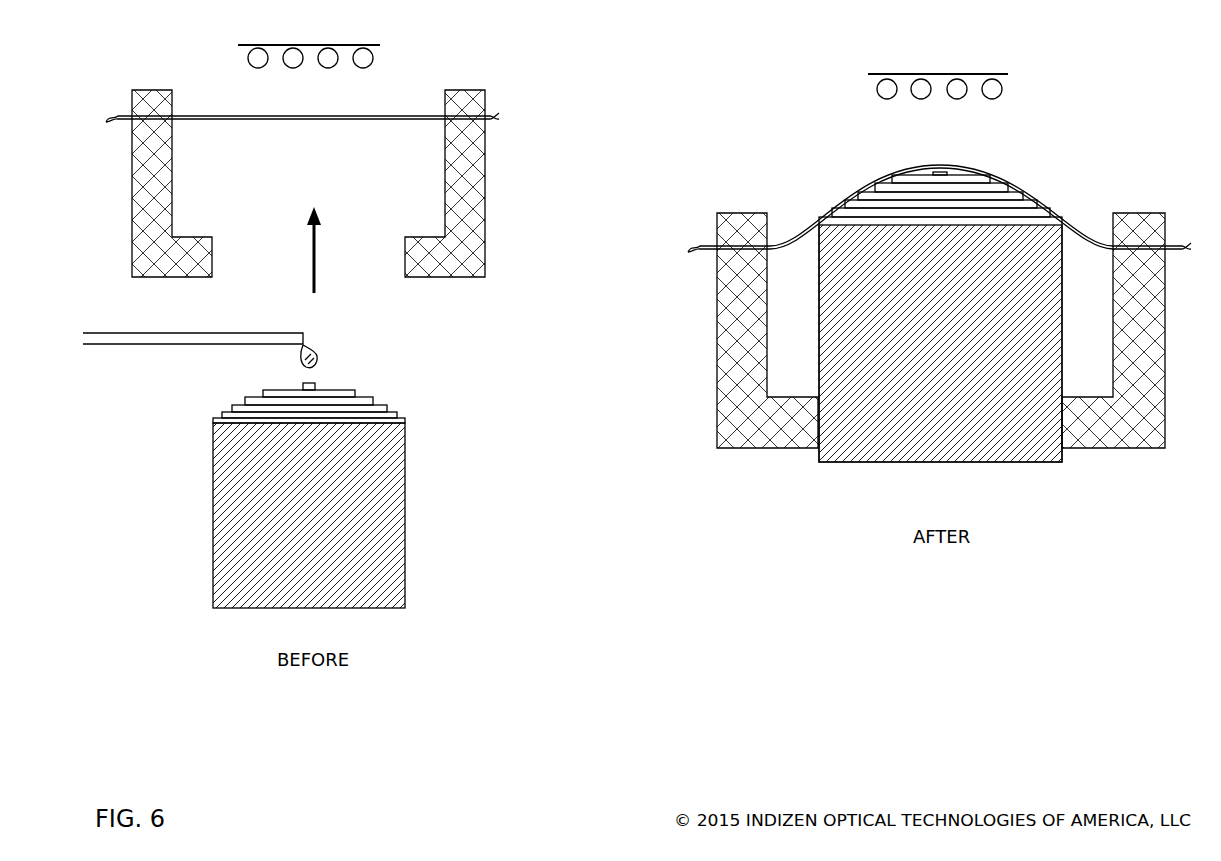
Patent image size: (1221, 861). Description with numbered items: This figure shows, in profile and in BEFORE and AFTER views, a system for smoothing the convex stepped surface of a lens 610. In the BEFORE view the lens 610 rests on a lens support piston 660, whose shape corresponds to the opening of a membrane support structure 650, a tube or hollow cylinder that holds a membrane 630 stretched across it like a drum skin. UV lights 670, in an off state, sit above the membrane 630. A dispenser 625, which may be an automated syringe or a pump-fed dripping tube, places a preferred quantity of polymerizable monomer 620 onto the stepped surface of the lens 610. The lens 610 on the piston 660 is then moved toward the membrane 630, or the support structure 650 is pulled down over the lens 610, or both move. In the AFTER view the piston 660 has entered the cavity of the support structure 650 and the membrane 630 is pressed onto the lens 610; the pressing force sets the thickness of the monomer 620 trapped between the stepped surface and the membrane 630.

The lens 610 is at (322, 415).
The monomer 620 is at (317, 353).
The dispenser 625 is at (155, 342).
The membrane 630 is at (253, 113).
The membrane support structure 650 is at (147, 213).
The lens support piston 660 is at (362, 515).
The UV lights 670 is at (663, 55).